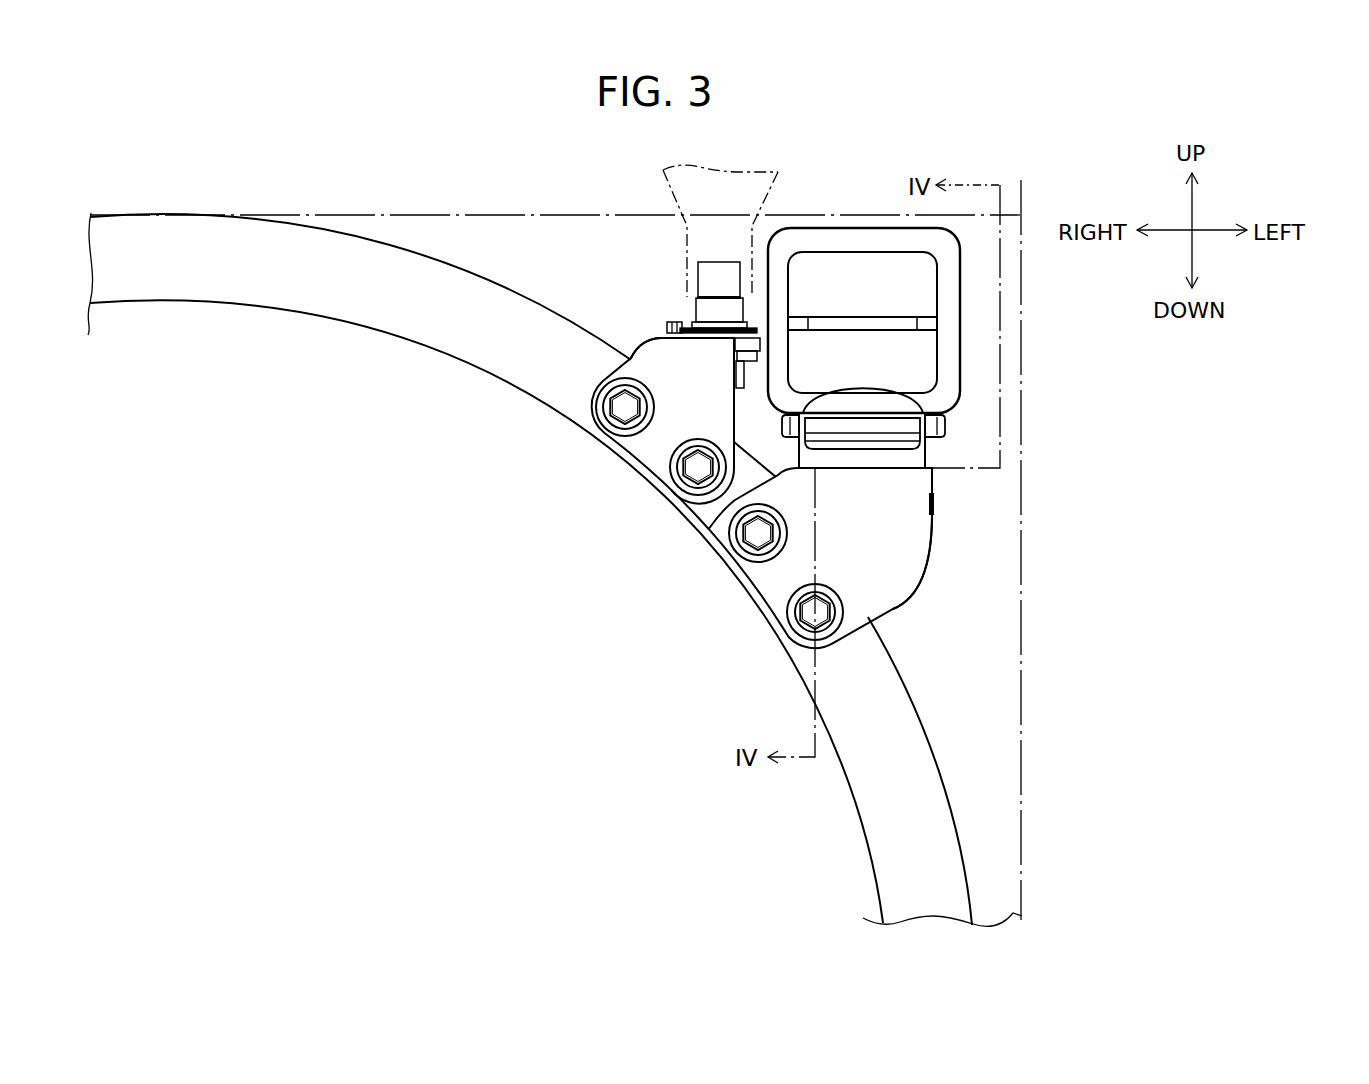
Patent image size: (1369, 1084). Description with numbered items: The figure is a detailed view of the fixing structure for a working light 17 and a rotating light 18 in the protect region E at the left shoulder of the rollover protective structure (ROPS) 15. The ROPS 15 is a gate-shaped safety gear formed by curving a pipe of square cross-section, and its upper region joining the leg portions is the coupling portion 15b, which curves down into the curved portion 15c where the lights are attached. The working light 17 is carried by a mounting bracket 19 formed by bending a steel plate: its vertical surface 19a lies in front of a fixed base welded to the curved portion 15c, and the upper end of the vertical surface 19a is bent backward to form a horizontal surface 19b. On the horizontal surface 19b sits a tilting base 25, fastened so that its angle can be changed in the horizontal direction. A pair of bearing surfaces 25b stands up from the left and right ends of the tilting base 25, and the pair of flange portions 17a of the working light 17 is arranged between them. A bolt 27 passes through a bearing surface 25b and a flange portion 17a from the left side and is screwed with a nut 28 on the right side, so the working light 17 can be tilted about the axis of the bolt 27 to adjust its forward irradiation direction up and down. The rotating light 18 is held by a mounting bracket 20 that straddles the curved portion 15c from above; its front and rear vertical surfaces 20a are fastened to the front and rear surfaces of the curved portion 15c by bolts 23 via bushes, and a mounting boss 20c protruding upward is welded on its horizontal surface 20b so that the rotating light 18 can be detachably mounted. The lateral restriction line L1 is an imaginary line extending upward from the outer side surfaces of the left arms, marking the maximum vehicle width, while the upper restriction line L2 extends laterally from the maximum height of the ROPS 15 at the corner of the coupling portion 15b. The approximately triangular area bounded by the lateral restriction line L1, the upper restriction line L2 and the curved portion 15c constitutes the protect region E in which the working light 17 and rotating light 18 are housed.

The rollover protective structure (ROPS) 15 is at (945, 775).
The coupling portion 15b is at (160, 232).
The curved portion 15c is at (912, 735).
The working light 17 is at (950, 308).
The flange portion 17a is at (818, 430).
The rotating light 18 is at (788, 179).
The mounting bracket 19 is at (757, 578).
The vertical surface 19a is at (885, 583).
The horizontal surface 19b is at (935, 472).
The mounting bracket 20 is at (642, 455).
The vertical surface 20a is at (653, 357).
The horizontal surface 20b is at (677, 322).
The mounting boss 20c is at (712, 268).
The bolt 23 is at (622, 412).
The tilting base 25 is at (800, 460).
The bearing surface 25b is at (905, 392).
The bolt 27 is at (938, 428).
The nut 28 is at (790, 427).
The protect region E is at (607, 244).
The lateral restriction line L1 is at (1027, 578).
The upper restriction line L2 is at (533, 208).